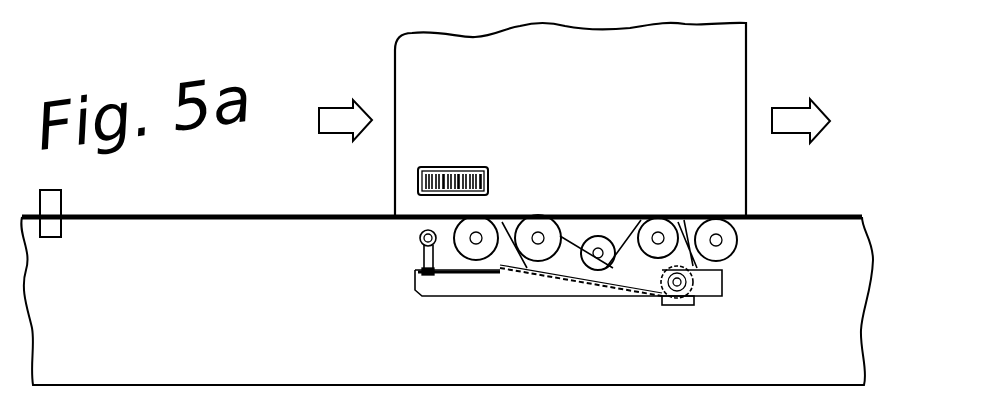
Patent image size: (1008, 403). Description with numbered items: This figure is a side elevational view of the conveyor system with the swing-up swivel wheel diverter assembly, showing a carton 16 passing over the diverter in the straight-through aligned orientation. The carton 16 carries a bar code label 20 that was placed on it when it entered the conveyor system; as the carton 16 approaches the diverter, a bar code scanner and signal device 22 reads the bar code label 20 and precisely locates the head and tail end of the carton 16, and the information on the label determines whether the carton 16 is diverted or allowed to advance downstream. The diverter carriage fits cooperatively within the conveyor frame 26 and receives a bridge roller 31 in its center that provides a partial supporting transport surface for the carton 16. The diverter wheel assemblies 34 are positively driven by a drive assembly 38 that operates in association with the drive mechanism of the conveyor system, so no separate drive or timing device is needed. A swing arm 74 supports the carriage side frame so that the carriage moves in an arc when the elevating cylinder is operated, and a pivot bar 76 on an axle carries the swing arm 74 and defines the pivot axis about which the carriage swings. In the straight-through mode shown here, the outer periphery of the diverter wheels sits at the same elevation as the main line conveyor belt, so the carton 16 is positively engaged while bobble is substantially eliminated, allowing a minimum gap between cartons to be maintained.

The carton 16 is at (662, 85).
The bar code label 20 is at (448, 178).
The bar code scanner and signal device 22 is at (50, 232).
The conveyor frame 26 is at (292, 343).
The bridge roller 31 is at (599, 213).
The diverter wheel assembly 34 is at (530, 206).
The drive assembly 38 is at (735, 263).
The swing arm 74 is at (533, 285).
The pivot bar 76 is at (430, 265).